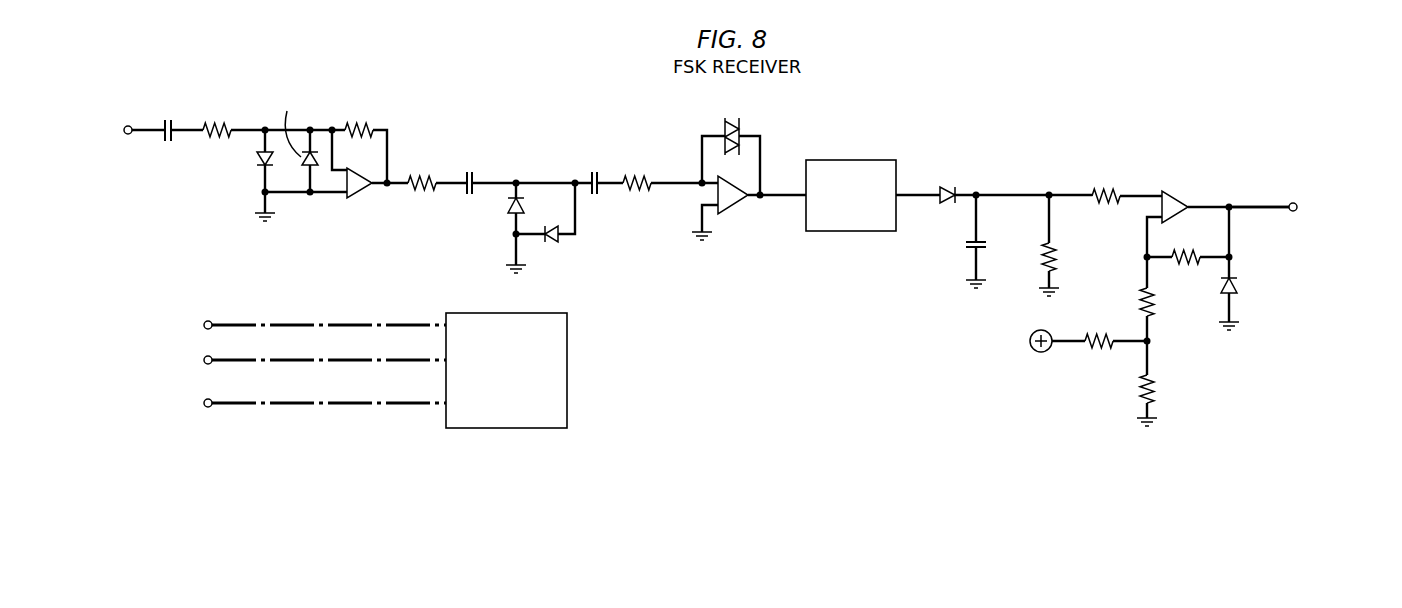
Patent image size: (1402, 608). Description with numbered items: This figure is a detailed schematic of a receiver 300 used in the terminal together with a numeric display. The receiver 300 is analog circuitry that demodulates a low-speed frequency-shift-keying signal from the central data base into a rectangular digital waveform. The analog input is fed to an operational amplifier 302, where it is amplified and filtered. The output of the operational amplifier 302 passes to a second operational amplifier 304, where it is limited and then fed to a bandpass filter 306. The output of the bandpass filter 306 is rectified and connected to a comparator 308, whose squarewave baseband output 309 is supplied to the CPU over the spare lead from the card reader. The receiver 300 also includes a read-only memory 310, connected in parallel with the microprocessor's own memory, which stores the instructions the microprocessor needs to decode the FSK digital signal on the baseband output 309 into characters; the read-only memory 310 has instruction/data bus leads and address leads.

The receiver 300 is at (924, 100).
The operational amplifier 302 is at (363, 194).
The operational amplifier 304 is at (735, 206).
The bandpass filter 306 is at (842, 166).
The comparator 308 is at (1178, 198).
The baseband output 309 is at (1256, 207).
The read-only memory 310 is at (560, 351).